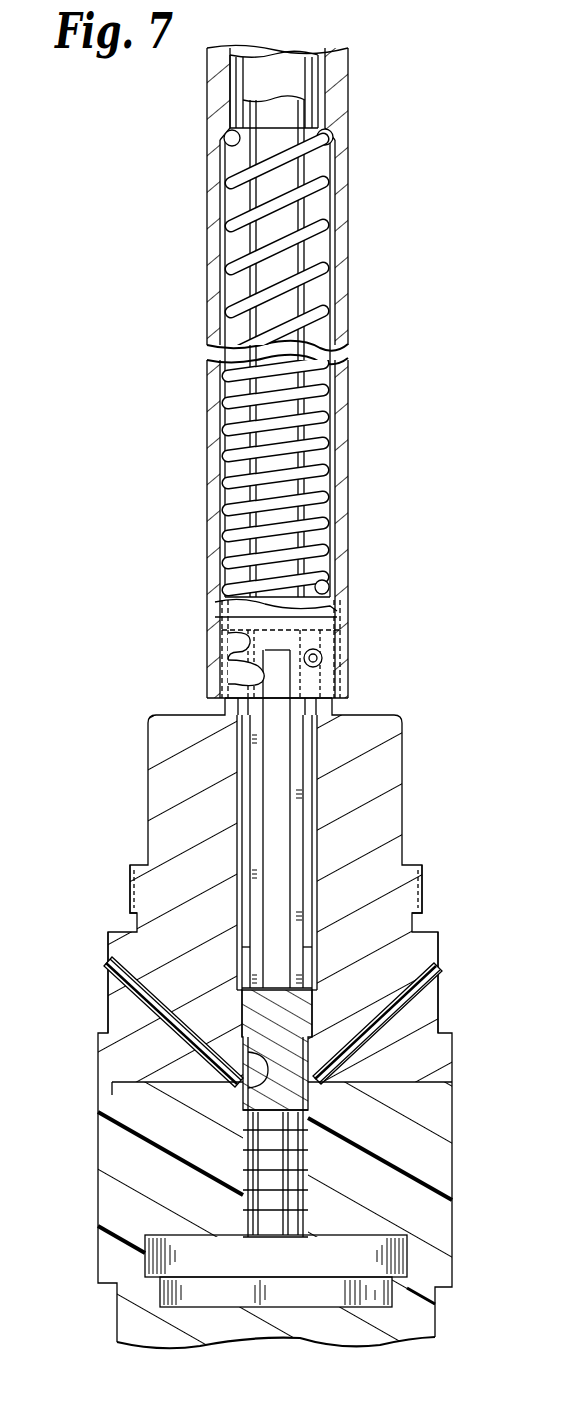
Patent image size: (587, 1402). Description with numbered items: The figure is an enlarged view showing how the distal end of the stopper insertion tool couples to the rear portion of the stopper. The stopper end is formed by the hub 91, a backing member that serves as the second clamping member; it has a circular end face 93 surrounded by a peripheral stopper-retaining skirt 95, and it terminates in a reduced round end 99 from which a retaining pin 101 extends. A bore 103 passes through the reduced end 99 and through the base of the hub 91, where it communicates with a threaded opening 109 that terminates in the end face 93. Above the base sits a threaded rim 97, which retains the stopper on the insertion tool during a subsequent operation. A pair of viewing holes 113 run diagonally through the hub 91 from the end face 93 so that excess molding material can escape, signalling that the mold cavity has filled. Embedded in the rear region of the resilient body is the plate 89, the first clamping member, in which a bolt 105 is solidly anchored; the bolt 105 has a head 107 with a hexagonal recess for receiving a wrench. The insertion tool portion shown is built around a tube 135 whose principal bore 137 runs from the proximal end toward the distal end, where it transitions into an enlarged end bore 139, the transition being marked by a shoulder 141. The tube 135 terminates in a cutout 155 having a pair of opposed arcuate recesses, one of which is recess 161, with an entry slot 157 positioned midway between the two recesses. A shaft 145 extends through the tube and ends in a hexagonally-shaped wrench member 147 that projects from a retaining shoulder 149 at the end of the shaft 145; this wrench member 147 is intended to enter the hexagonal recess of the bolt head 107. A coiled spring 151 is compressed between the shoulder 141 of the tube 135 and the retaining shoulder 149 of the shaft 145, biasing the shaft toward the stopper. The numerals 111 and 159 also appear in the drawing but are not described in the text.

The plate 89 is at (385, 1260).
The hub 91 is at (410, 708).
The circular end face 93 is at (353, 1090).
The stopper-retaining skirt 95 is at (110, 1095).
The threaded rim 97 is at (423, 887).
The reduced round end 99 is at (213, 707).
The retaining pin 101 is at (318, 650).
The bore 103 is at (303, 845).
The bolt 105 is at (303, 1145).
The head 107 is at (285, 1018).
The threaded opening 109 is at (255, 1092).
The flange 111 is at (425, 932).
The viewing holes 113 is at (145, 1023).
The tube 135 is at (350, 86).
The principal bore 137 is at (228, 88).
The enlarged end bore 139 is at (218, 225).
The shoulder 141 is at (322, 142).
The shaft 145 is at (320, 200).
The wrench member 147 is at (303, 790).
The retaining shoulder 149 is at (346, 594).
The coiled spring 151 is at (333, 232).
The cutout 155 is at (325, 612).
The entry slot 157 is at (253, 678).
The notch 159 is at (213, 636).
The arcuate recess 161 is at (322, 660).